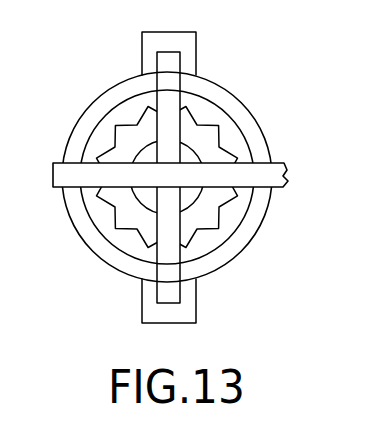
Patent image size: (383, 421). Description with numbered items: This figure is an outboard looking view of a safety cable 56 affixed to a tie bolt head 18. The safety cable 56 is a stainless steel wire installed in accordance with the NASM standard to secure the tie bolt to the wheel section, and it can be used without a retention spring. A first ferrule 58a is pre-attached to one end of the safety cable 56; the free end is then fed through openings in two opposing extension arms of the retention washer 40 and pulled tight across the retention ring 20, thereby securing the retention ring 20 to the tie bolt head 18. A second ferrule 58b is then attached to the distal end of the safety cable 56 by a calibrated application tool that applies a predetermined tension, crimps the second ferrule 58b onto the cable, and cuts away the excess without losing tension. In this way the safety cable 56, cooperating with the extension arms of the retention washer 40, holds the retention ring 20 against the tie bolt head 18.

The tie bolt head 18 is at (243, 141).
The retention ring 20 is at (284, 188).
The retention washer 40 is at (252, 117).
The safety cable 56 is at (157, 57).
The first ferrule 58a is at (196, 52).
The second ferrule 58b is at (196, 303).